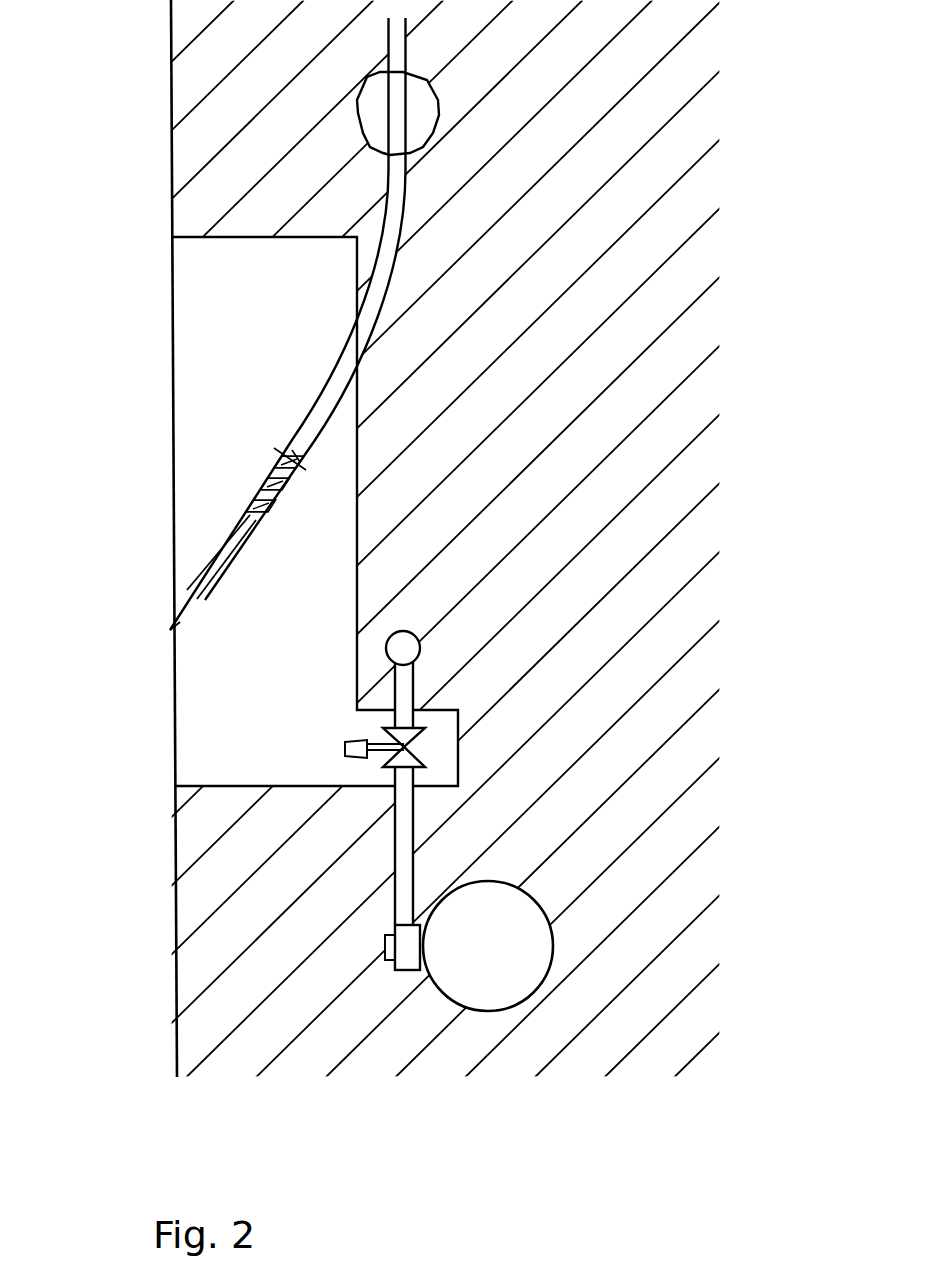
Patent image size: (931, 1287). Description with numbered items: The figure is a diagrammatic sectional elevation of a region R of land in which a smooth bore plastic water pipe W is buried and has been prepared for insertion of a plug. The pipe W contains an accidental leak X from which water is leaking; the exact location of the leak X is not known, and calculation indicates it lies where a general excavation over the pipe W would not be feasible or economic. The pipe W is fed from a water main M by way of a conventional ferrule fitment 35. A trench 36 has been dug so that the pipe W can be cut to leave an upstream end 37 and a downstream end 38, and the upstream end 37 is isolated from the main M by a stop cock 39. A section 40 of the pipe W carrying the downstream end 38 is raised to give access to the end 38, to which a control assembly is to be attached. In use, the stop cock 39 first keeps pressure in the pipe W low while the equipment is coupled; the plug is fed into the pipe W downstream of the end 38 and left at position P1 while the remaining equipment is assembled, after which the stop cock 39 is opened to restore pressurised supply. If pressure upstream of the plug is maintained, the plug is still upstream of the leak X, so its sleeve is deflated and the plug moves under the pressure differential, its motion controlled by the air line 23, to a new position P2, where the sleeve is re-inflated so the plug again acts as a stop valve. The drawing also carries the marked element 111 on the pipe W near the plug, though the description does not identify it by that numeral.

The leak X is at (377, 115).
The water pipe W is at (398, 208).
The region of land R is at (250, 292).
The new position P2 is at (336, 340).
The sensor units 111 is at (277, 483).
The position P1 is at (230, 528).
The section of pipe 40 is at (217, 557).
The downstream end 38 is at (190, 592).
The air line 23 is at (110, 637).
The trench 36 is at (217, 730).
The pressure sensor P is at (412, 645).
The upstream end 37 is at (415, 669).
The stop cock 39 is at (425, 747).
The water main M is at (554, 946).
The ferrule fitment 35 is at (395, 932).